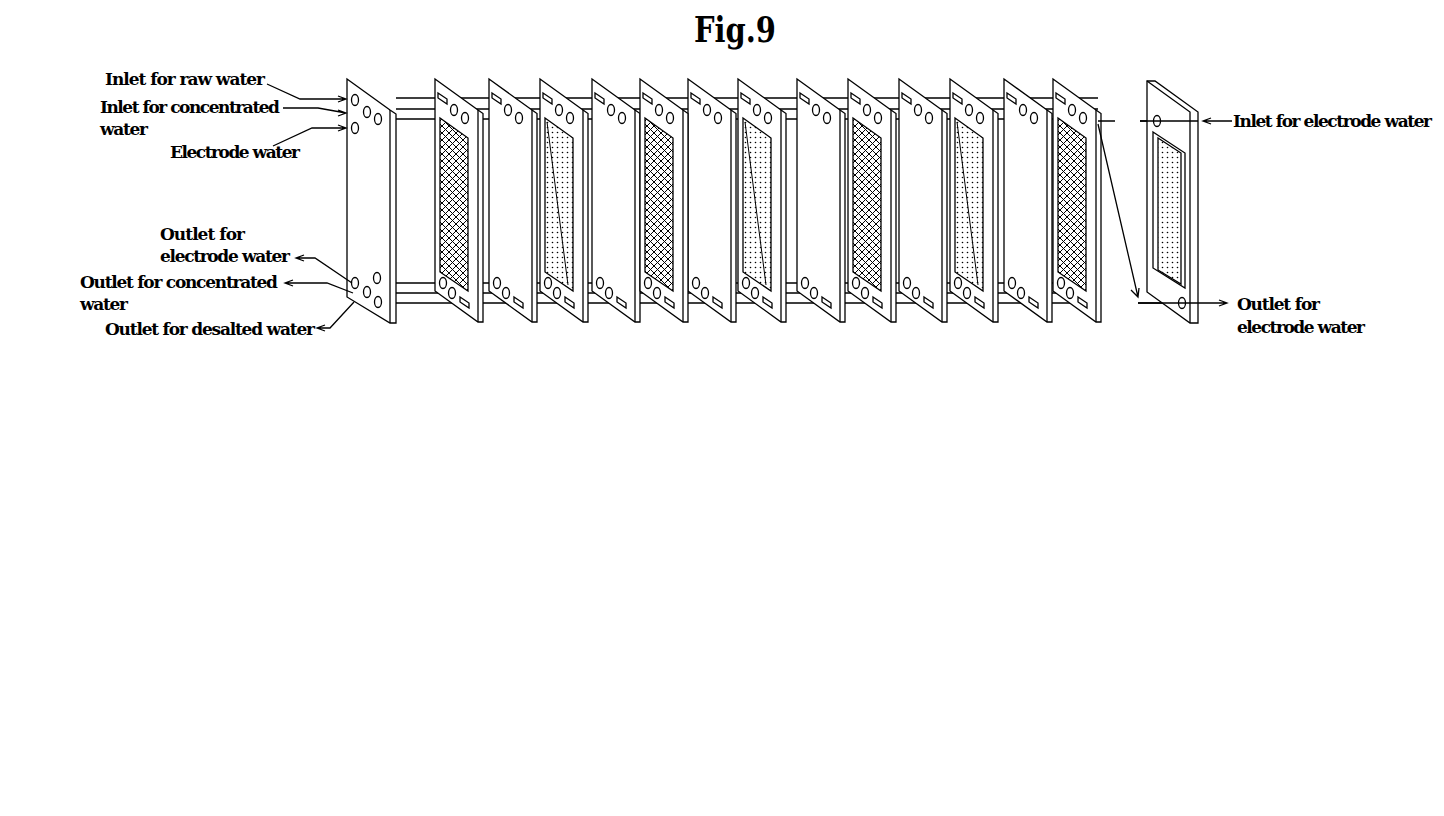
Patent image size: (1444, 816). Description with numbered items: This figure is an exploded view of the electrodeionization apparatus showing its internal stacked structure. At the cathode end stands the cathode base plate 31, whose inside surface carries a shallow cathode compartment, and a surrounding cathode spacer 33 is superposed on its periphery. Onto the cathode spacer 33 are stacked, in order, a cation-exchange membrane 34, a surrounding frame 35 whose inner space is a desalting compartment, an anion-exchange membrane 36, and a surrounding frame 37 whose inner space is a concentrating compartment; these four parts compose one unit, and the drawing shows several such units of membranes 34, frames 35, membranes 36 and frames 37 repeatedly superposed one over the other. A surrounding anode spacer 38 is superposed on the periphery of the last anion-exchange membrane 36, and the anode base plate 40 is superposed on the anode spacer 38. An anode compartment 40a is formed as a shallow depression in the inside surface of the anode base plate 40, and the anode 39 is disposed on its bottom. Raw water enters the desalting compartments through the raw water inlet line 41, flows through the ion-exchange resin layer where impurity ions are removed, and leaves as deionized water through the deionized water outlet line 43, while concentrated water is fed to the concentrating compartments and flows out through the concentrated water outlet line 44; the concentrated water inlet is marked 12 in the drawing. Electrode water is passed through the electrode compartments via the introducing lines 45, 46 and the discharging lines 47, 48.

The inlet for concentrated water 12 is at (300, 112).
The cathode base plate 31 is at (357, 191).
The cathode spacer 33 is at (459, 233).
The cation-exchange membrane 34 is at (718, 233).
The frame for defining a desalting compartment 35 is at (769, 233).
The anion-exchange membrane 36 is at (822, 233).
The frame for defining a concentrating compartment 37 is at (768, 233).
The anode spacer 38 is at (1077, 233).
The anode 39 is at (1163, 198).
The anode base plate 40 is at (1202, 215).
The anode compartment 40a is at (1177, 258).
The raw water inlet line 41 is at (318, 99).
The deionized water outlet line 43 is at (339, 330).
The concentrated water outlet line 44 is at (312, 289).
The electrode water introducing line 45 is at (313, 131).
The electrode water introducing line 46 is at (1222, 123).
The electrode water discharging line 47 is at (320, 258).
The electrode water discharging line 48 is at (1215, 306).